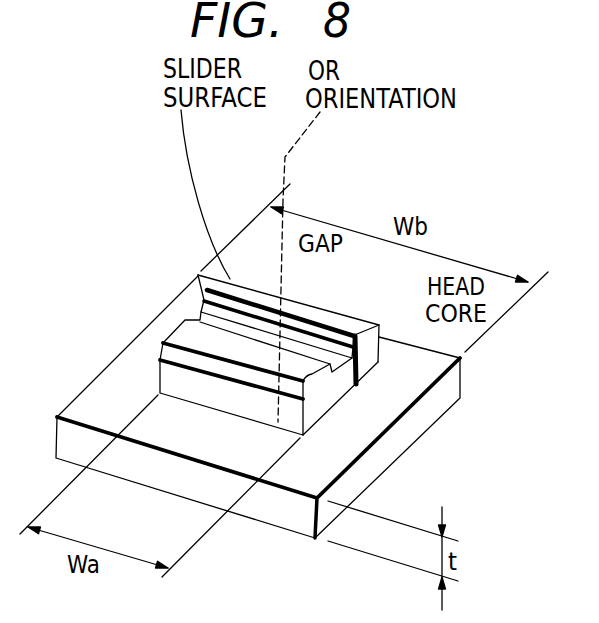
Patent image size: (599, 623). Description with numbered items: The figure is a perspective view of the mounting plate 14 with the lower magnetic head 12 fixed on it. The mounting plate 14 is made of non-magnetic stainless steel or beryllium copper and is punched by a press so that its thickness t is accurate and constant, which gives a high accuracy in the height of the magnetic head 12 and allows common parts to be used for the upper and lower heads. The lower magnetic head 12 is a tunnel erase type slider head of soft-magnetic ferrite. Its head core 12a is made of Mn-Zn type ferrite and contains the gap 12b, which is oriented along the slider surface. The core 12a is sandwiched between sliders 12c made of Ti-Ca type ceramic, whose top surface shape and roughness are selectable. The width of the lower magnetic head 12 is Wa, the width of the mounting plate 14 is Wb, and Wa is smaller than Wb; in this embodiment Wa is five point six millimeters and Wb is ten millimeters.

The lower magnetic head 12 is at (281, 345).
The head core 12a is at (355, 352).
The gap 12b is at (281, 313).
The sliders 12c is at (362, 384).
The mounting plate 14 is at (102, 388).